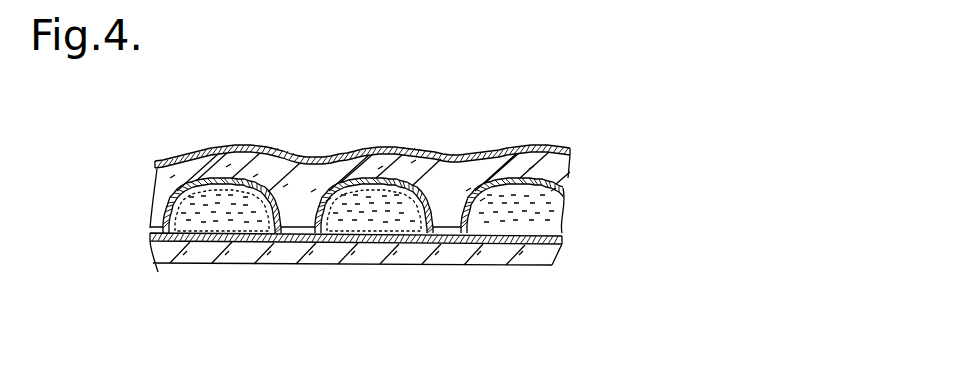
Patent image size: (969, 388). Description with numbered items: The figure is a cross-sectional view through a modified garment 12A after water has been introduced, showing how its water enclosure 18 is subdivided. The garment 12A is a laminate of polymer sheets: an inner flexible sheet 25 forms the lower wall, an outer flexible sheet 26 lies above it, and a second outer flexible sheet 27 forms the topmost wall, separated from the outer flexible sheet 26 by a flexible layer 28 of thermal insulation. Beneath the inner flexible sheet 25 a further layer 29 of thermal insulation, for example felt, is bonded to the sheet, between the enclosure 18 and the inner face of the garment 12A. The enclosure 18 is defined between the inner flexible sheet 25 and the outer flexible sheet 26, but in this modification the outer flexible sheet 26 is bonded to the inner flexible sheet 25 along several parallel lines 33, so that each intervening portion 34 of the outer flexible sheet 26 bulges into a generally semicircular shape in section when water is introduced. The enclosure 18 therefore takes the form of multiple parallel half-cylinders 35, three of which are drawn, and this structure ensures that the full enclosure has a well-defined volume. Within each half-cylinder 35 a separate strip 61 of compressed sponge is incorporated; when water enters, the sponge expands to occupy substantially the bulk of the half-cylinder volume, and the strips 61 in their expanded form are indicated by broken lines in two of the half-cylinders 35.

The modified garment 12A is at (572, 111).
The enclosure 18 is at (203, 203).
The inner flexible sheet 25 is at (562, 238).
The outer flexible sheet 26 is at (570, 181).
The second outer flexible sheet 27 is at (572, 148).
The flexible layer of thermal insulation 28 is at (437, 183).
The layer of thermal insulation 29 is at (478, 257).
The parallel lines 33 is at (149, 230).
The intervening portion 34 is at (221, 178).
The half-cylinder 35 is at (232, 215).
The strip of compressed sponge 61 is at (195, 222).